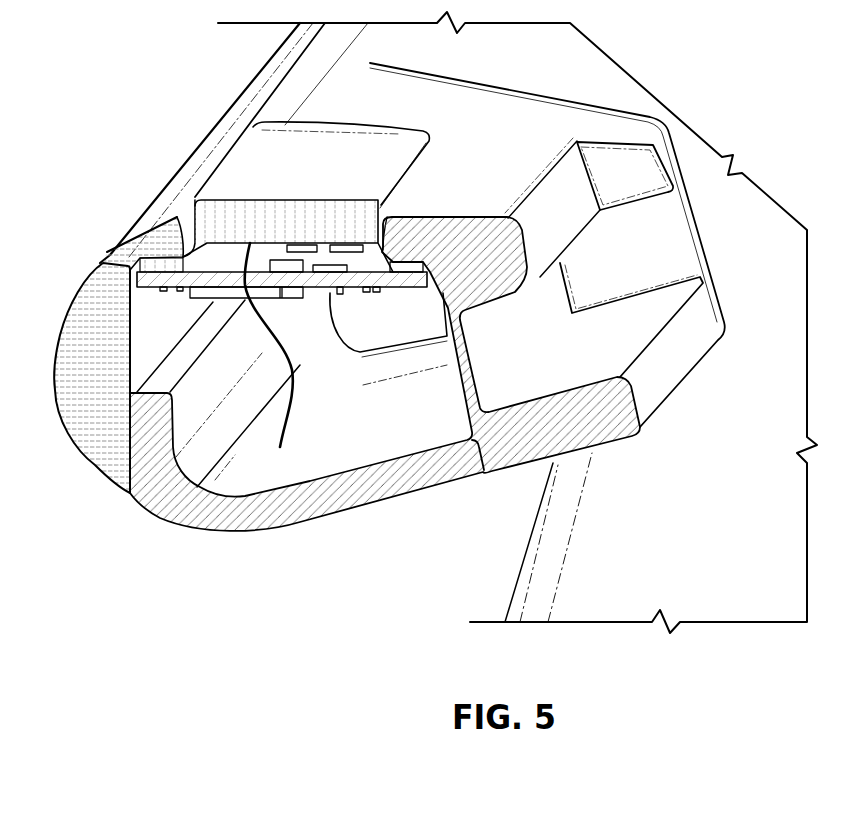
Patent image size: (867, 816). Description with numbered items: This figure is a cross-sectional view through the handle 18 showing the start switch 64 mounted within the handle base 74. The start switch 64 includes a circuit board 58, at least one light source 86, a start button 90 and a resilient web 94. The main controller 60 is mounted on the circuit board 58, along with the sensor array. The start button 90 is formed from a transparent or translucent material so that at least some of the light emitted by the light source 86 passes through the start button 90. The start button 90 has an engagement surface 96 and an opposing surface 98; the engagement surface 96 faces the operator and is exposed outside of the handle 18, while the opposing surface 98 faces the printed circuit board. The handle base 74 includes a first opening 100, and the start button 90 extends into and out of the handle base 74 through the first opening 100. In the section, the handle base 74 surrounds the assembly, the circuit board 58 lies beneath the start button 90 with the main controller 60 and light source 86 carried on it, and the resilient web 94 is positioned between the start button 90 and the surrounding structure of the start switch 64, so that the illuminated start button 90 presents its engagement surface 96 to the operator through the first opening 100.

The handle 18 is at (240, 97).
The circuit board 58 is at (333, 303).
The main controller 60 is at (230, 302).
The start switch 64 is at (243, 143).
The handle base 74 is at (110, 247).
The light source 86 is at (287, 298).
The start button 90 is at (207, 173).
The resilient web 94 is at (177, 217).
The engagement surface 96 is at (332, 143).
The opposing surface 98 is at (280, 447).
The first opening 100 is at (423, 168).